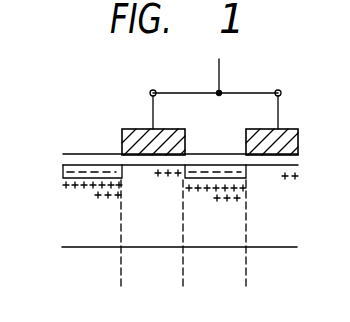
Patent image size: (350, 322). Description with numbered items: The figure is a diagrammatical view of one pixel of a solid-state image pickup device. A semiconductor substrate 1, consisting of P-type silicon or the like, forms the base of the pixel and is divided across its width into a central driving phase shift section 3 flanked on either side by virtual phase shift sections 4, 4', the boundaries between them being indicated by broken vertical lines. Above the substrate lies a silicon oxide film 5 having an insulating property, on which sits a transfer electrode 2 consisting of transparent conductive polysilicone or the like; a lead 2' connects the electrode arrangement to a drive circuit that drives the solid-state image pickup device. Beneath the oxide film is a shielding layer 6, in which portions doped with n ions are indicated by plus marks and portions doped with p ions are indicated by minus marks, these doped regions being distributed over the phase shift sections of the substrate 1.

The semiconductor substrate 1 is at (57, 217).
The transfer electrode 2 is at (135, 125).
The lead 2' is at (224, 103).
The driving phase shift section 3 is at (164, 233).
The virtual phase shift section 4 is at (101, 233).
The virtual phase shift section 4' is at (226, 233).
The silicon oxide film 5 is at (293, 164).
The shielding layer 6 is at (63, 172).